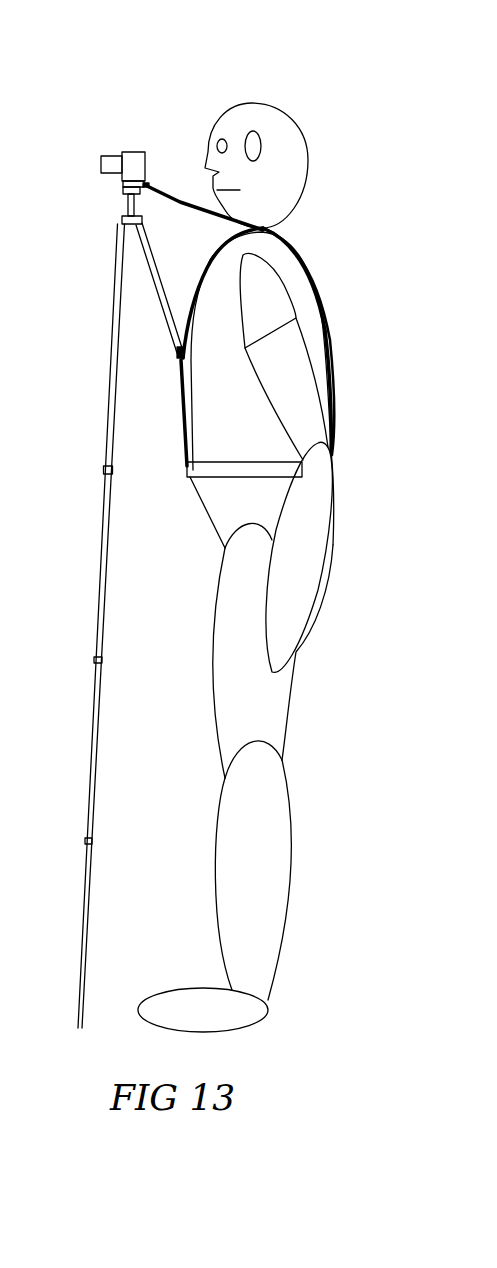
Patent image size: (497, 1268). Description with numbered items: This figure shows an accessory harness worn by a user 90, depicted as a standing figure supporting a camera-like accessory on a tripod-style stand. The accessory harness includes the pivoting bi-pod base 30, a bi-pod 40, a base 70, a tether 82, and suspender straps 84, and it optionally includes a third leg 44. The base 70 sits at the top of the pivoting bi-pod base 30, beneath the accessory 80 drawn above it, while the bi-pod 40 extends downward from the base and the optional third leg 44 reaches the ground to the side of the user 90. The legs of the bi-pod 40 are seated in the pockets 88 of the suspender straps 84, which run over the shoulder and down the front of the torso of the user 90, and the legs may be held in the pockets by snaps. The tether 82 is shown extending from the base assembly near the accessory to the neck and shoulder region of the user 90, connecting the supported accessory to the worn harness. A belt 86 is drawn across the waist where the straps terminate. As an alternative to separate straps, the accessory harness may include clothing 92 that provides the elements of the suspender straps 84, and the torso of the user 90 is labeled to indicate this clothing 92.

The pivoting bi-pod base 30 is at (111, 601).
The bi-pod 40 is at (157, 292).
The third leg 44 is at (112, 310).
The base 70 is at (122, 188).
The camera 80 is at (140, 166).
The tether 82 is at (177, 192).
The suspender straps 84 is at (190, 305).
The belt 86 is at (213, 470).
The pockets 88 is at (175, 362).
The user 90 is at (250, 521).
The clothing 92 is at (238, 413).